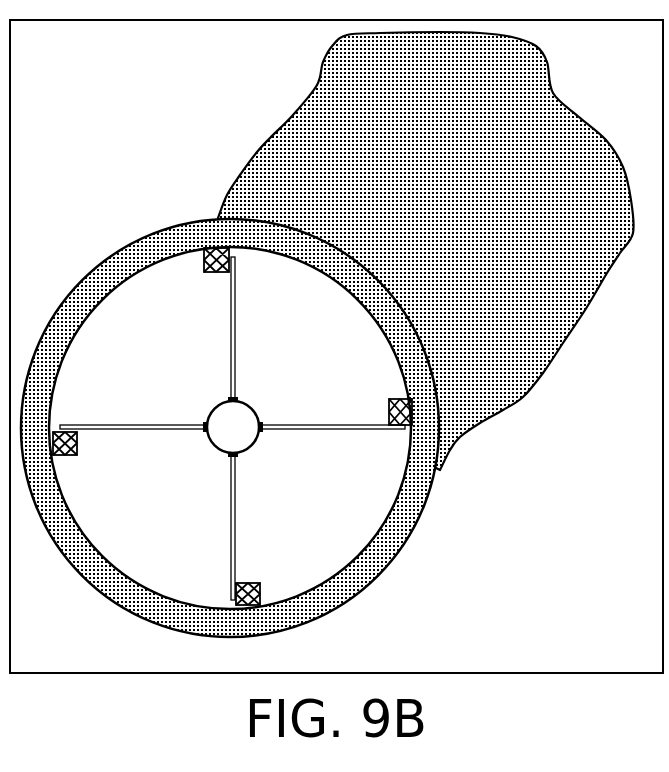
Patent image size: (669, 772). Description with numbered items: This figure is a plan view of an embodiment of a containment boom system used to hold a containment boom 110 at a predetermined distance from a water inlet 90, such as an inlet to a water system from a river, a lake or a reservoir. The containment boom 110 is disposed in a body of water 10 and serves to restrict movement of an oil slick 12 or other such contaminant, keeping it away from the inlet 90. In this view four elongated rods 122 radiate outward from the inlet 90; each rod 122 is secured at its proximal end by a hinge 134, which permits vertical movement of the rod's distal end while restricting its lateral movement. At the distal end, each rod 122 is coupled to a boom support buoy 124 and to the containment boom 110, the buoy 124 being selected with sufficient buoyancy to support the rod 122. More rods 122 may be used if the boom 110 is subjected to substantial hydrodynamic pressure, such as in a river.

The body of water 10 is at (624, 521).
The oil slick 12 is at (450, 192).
The water inlet 90 is at (216, 446).
The containment boom 110 is at (153, 232).
The elongated rod 122 is at (237, 322).
The boom support buoy 124 is at (213, 272).
The hinge 134 is at (235, 400).